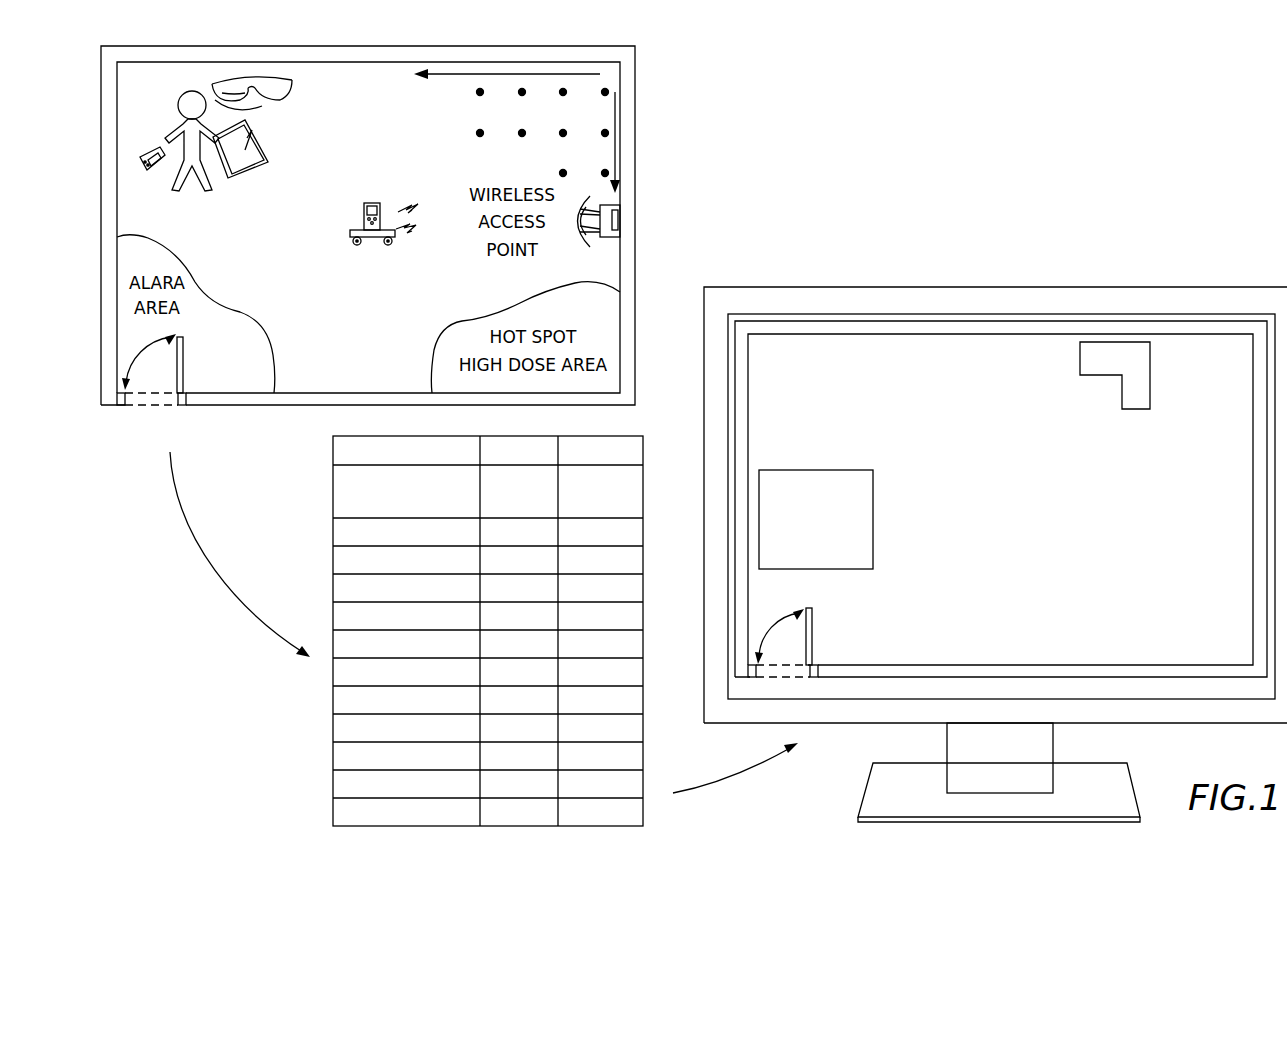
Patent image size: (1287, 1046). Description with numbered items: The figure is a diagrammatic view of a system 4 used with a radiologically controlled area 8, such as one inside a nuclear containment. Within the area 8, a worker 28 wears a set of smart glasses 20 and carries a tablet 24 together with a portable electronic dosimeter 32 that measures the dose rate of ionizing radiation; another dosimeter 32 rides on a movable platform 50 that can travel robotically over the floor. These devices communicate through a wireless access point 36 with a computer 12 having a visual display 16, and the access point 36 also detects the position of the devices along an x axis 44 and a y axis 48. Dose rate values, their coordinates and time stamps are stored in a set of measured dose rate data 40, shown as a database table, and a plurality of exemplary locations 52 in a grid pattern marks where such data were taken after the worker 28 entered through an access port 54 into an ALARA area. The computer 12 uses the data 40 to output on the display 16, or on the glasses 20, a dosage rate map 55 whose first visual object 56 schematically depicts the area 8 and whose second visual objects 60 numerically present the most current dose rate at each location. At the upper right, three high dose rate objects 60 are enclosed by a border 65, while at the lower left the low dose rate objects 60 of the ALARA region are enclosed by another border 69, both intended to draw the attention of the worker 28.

The system 4 is at (995, 502).
The radiologically controlled area (RCA) 8 is at (641, 167).
The computer 12 is at (1030, 287).
The visual display 16 is at (856, 352).
The glasses 20 is at (289, 99).
The tablet 24 is at (258, 165).
The worker 28 is at (205, 188).
The portable electronic dosimeter 32 is at (155, 172).
The wireless access point 36 is at (610, 237).
The set of dose rate measured data 40 is at (322, 678).
The x axis 44 is at (458, 76).
The y axis 48 is at (617, 117).
The movable platform 50 is at (350, 233).
The exemplary locations 52 is at (480, 92).
The access port 54 is at (150, 404).
The dosage rate map 55 is at (1176, 316).
The first visual object 56 is at (1113, 320).
The second visual objects 60 is at (1141, 367).
The border 65 is at (1080, 355).
The border 69 is at (873, 505).